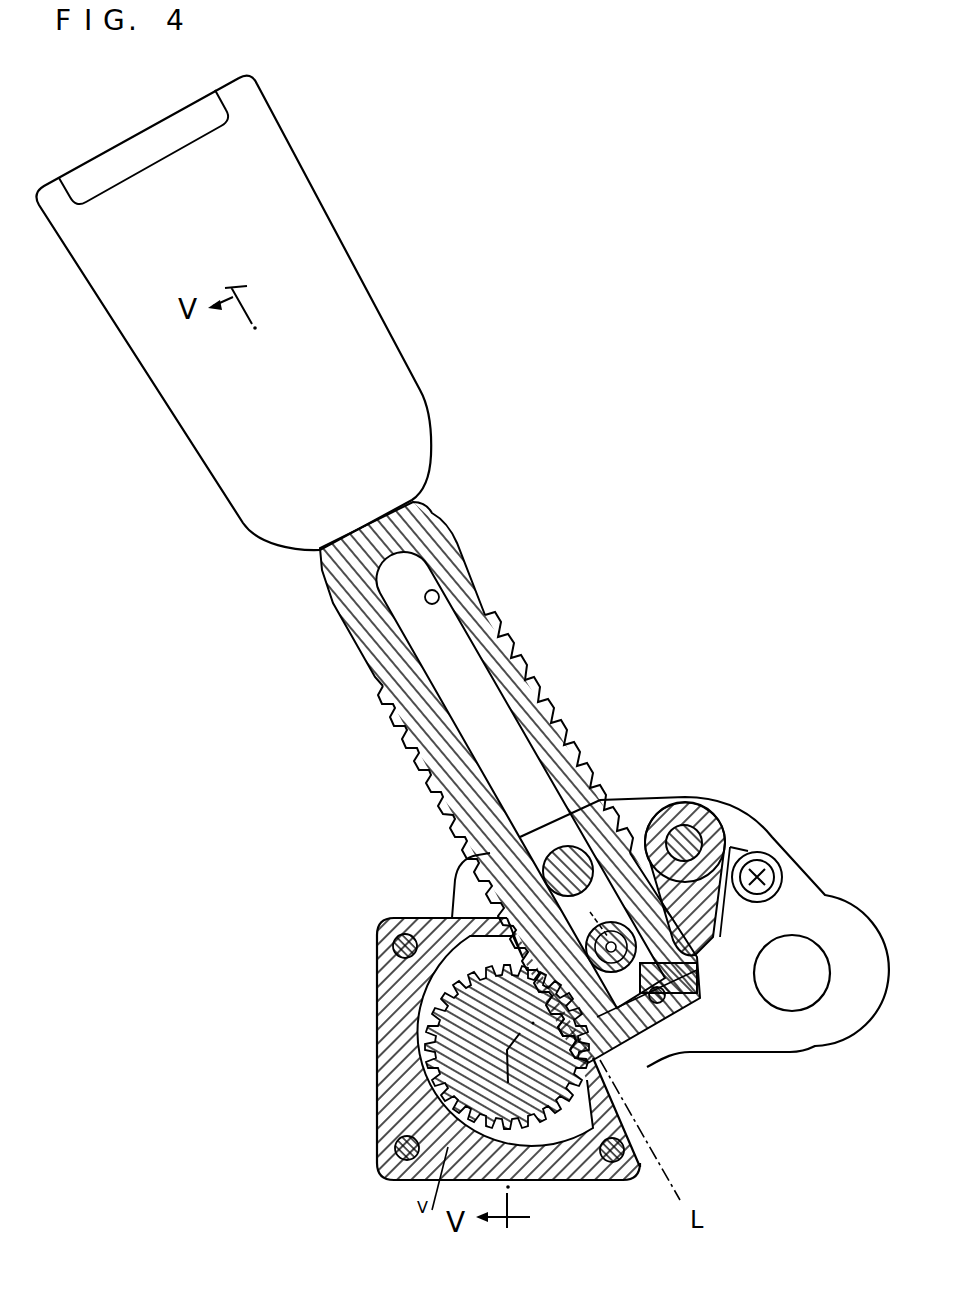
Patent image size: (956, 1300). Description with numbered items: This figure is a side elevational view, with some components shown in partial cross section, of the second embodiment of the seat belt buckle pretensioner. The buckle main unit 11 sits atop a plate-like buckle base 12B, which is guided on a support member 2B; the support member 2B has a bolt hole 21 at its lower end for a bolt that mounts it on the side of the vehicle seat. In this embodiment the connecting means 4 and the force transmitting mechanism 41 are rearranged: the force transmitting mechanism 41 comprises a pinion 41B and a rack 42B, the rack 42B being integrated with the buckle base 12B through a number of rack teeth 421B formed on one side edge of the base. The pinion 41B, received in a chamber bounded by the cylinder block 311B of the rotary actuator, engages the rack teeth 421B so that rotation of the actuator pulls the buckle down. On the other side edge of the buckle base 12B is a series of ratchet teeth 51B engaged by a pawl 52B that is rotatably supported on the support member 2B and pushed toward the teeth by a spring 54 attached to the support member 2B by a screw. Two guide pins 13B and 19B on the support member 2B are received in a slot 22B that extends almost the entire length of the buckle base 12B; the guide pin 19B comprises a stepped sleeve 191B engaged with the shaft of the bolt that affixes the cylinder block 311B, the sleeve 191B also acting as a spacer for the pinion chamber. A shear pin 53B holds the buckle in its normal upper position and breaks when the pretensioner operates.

The buckle main unit 11 is at (322, 225).
The buckle base 12B is at (334, 623).
The slot 22B is at (438, 594).
The rack 42B is at (500, 656).
The rack teeth 421B is at (405, 724).
The connecting means 4 is at (452, 829).
The cylinder block 311B is at (377, 974).
The pinion 41B is at (445, 1070).
The force transmitting mechanism 41 is at (600, 1036).
The guide pin 13B is at (610, 797).
The ratchet teeth 51B is at (567, 730).
The pawl 52B is at (673, 800).
The support member 2B is at (793, 883).
The spring 54 is at (740, 847).
The bolt hole 21 is at (792, 945).
The guide pin 19B is at (603, 1036).
The stepped sleeve 191B is at (690, 967).
The shear pin 53B is at (665, 1001).